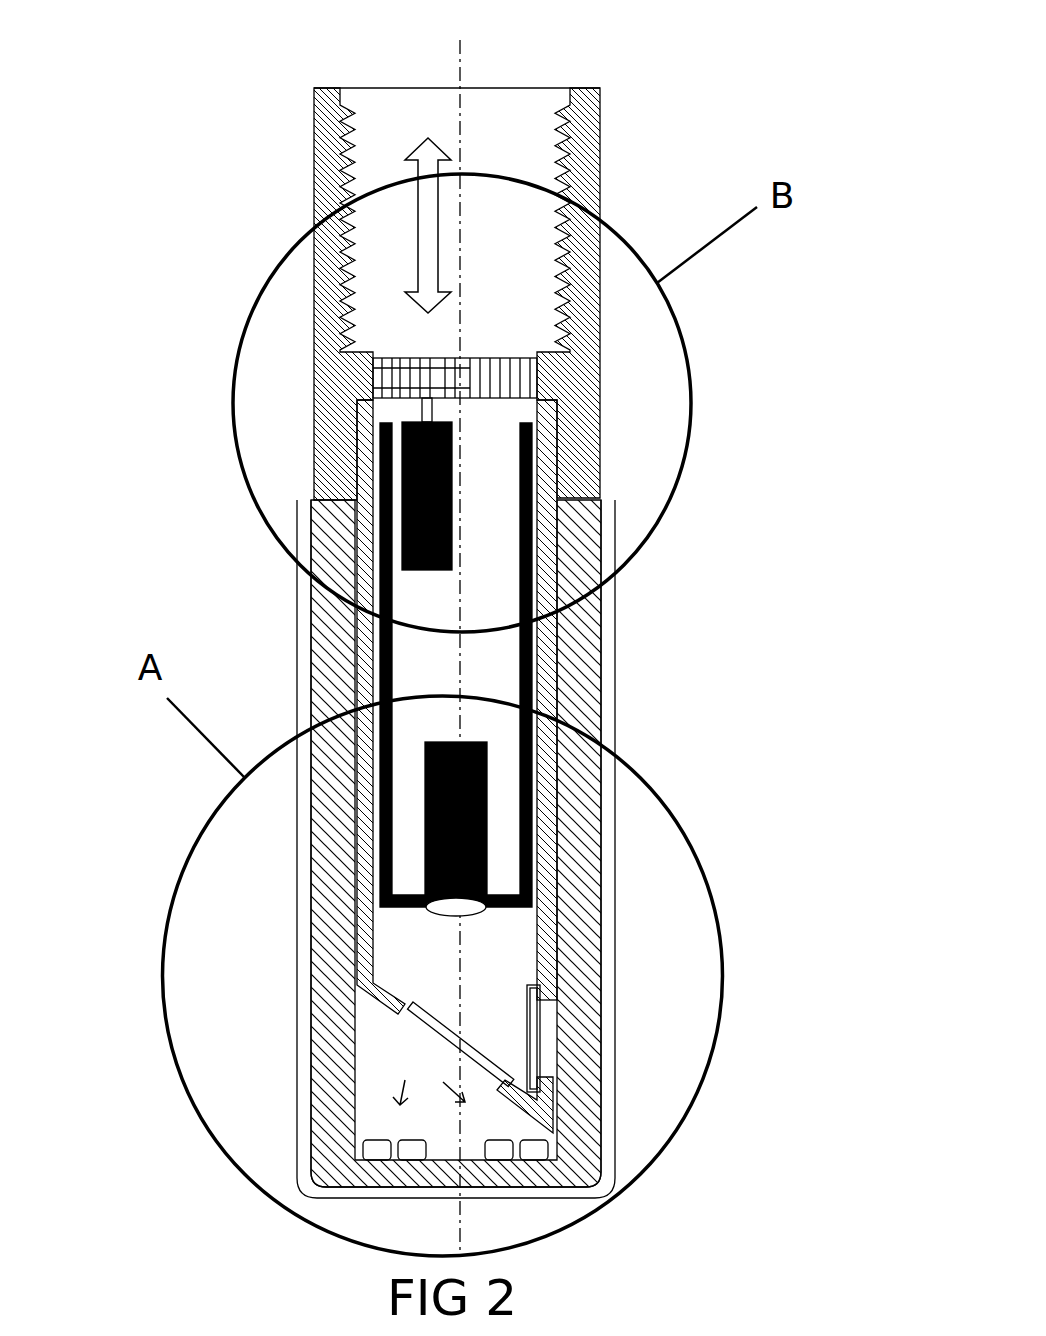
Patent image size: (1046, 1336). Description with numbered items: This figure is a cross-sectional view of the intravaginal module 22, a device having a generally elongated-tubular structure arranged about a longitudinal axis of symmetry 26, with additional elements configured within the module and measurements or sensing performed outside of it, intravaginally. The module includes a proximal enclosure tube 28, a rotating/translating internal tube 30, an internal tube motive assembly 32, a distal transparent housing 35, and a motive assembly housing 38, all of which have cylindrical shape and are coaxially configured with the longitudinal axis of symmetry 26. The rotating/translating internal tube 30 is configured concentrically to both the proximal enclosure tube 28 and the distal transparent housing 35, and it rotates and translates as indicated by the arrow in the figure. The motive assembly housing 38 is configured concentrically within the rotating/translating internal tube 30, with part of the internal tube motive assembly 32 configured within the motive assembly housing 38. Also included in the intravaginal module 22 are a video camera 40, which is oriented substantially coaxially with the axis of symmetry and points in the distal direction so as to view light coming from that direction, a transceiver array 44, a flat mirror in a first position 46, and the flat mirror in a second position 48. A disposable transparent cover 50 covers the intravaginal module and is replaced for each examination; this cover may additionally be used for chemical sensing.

The intravaginal module 22 is at (216, 56).
The longitudinal axis of symmetry 26 is at (460, 70).
The proximal enclosure tube 28 is at (308, 395).
The rotating/translating internal tube 30 is at (358, 502).
The internal tube motive assembly 32 is at (485, 342).
The distal transparent housing 35 is at (580, 560).
The motive assembly housing 38 is at (523, 500).
The video camera 40 is at (487, 797).
The transceiver array 44 is at (429, 1078).
The flat mirror in a first position 46 is at (453, 1035).
The flat mirror in a second position 48 is at (542, 1027).
The disposable transparent cover 50 is at (612, 832).